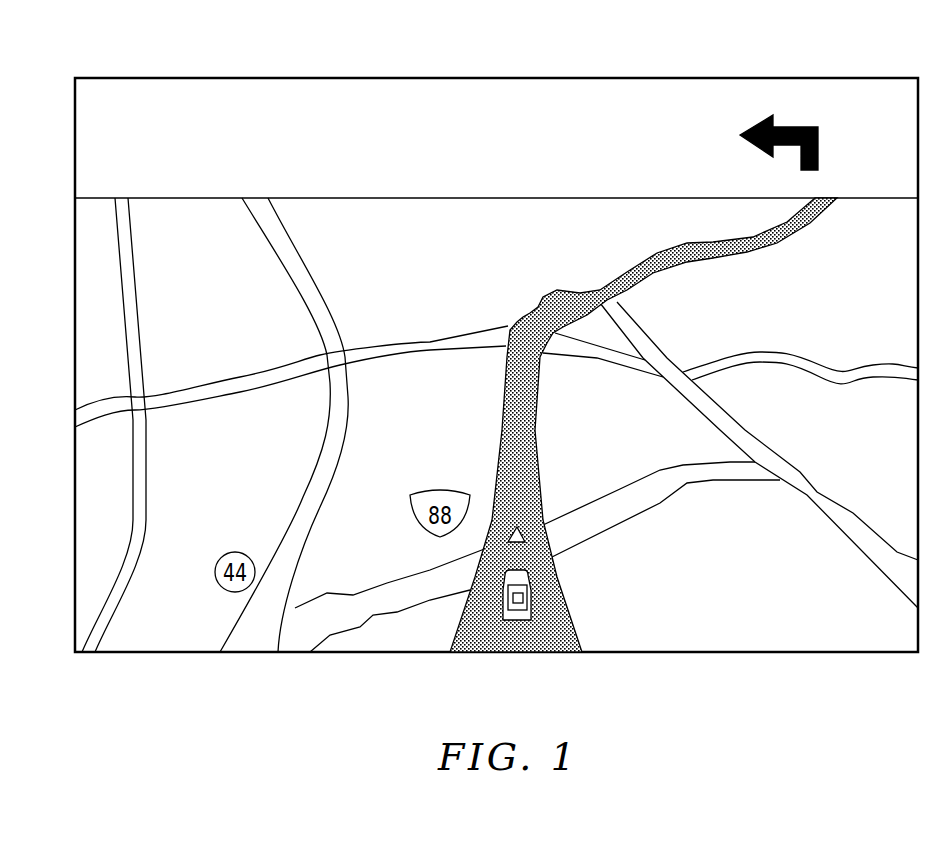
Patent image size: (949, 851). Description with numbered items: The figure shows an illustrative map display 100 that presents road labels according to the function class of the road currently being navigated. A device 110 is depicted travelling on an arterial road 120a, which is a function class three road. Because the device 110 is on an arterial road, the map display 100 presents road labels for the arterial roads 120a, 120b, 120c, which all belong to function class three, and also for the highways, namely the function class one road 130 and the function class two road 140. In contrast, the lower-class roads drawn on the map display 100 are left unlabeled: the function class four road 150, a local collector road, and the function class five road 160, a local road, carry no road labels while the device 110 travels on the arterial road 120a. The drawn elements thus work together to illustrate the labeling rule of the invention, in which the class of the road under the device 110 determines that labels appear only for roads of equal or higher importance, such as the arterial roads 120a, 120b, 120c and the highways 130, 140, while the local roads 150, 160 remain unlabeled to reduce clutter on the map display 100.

The map display 100 is at (838, 76).
The device 110 is at (532, 597).
The arterial road 120a is at (562, 632).
The arterial road 120b is at (303, 495).
The arterial road 120c is at (868, 365).
The function class 1 highway 130 is at (820, 490).
The function class 2 road 140 is at (660, 505).
The function class 4 road 150 is at (412, 345).
The function class 5 road 160 is at (138, 312).